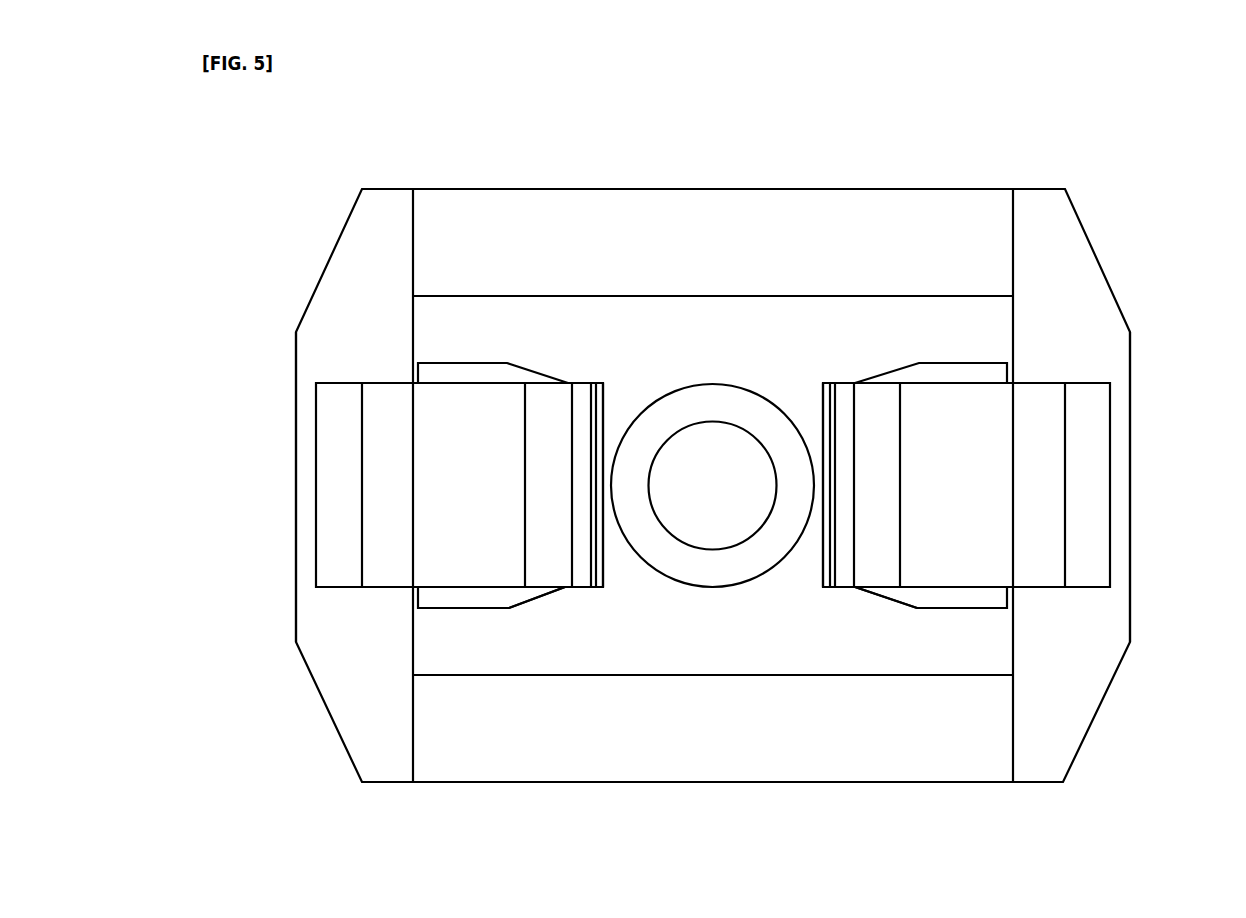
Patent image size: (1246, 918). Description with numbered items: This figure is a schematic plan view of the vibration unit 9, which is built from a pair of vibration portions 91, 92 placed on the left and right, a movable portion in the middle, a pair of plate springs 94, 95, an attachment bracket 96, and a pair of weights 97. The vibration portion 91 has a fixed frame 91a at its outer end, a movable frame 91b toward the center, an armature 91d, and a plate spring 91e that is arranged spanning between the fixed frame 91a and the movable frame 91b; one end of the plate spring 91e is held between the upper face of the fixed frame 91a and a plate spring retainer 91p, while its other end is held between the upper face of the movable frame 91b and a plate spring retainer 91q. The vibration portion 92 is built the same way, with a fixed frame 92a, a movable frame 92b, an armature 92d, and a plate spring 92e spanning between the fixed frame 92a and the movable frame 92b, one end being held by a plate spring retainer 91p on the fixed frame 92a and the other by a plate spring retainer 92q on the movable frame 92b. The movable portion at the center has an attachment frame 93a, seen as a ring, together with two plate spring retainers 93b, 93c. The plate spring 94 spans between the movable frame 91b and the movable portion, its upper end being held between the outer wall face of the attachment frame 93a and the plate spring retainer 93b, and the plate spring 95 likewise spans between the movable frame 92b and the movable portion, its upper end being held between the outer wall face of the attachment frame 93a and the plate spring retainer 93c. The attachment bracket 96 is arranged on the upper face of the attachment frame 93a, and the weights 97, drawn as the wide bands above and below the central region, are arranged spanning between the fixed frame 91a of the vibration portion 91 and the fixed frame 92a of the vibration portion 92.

The vibration unit 9 is at (923, 138).
The vibration portion 91 is at (250, 253).
The vibration portion 92 is at (1172, 253).
The fixed frame 91a is at (296, 437).
The fixed frame 92a is at (1130, 435).
The plate spring retainer 91p is at (315, 535).
The movable frame 91b is at (573, 383).
The movable frame 92b is at (853, 383).
The armature 91d is at (462, 362).
The armature 92d is at (962, 362).
The plate spring 91e is at (462, 590).
The plate spring 92e is at (962, 590).
The plate spring retainer 91q is at (538, 592).
The plate spring retainer 92q is at (885, 592).
The attachment frame 93a is at (660, 590).
The plate spring retainer 93b is at (595, 587).
The plate spring retainer 93c is at (828, 587).
The plate spring 94 is at (603, 383).
The plate spring 95 is at (823, 383).
The attachment bracket 96 is at (768, 590).
The weight 97 is at (712, 189).